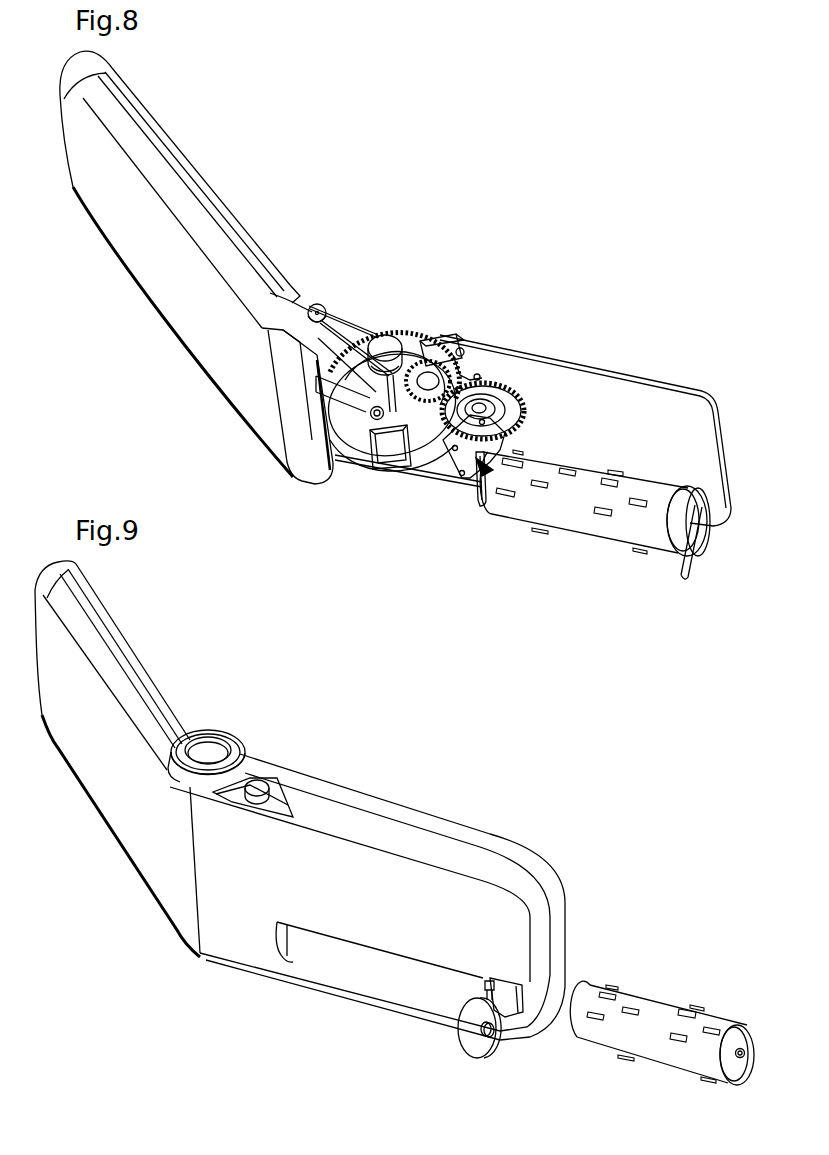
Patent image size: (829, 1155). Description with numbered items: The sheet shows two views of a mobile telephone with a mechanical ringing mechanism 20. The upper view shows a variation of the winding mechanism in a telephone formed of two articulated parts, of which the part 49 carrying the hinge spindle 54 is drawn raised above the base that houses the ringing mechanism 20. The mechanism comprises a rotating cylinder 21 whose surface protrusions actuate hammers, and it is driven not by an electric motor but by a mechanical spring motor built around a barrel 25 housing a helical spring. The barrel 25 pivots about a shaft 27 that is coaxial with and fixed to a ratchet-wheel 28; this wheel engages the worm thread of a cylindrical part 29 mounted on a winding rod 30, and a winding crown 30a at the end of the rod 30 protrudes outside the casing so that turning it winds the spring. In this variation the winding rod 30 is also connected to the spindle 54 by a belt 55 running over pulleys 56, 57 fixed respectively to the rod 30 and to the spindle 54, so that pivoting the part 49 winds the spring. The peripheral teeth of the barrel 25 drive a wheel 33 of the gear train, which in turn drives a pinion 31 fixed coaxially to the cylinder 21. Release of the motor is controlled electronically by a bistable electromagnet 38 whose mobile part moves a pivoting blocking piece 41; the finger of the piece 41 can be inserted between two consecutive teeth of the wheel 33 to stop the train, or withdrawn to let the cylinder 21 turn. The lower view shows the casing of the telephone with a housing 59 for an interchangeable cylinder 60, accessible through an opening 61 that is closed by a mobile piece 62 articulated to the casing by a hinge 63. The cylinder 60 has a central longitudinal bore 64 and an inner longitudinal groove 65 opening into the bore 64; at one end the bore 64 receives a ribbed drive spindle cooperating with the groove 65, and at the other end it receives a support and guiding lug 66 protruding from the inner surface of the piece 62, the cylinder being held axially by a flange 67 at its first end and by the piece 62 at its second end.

In FIG. 8, the ringing mechanism 20 is at (434, 488).
In FIG. 8, the rotating cylinder 21 is at (625, 528).
In FIG. 8, the barrel 25 is at (420, 440).
In FIG. 8, the shaft 27 is at (375, 446).
In FIG. 8, the ratchet-wheel 28 is at (330, 466).
In FIG. 8, the cylindrical part with a worm thread 29 is at (400, 450).
In FIG. 8, the winding rod 30 is at (425, 452).
In FIG. 8, the winding crown 30a is at (388, 352).
In FIG. 8, the pinion 31 is at (478, 492).
In FIG. 8, the wheel 33 is at (525, 418).
In FIG. 8, the bistable electromagnet 38 is at (445, 340).
In FIG. 8, the pivoting blocking piece 41 is at (480, 372).
In FIG. 8, the part of the telephone 49 is at (175, 195).
In FIG. 8, the spindle 54 is at (316, 304).
In FIG. 8, the belt 55 is at (349, 328).
In FIG. 8, the pulley 56 is at (372, 412).
In FIG. 8, the pulley 57 is at (300, 298).
In FIG. 9, the housing 59 is at (352, 968).
In FIG. 9, the cylinder 60 is at (641, 1045).
In FIG. 9, the opening 61 is at (510, 990).
In FIG. 8, the mobile piece 62 is at (690, 508).
In FIG. 9, the mobile piece 62 is at (463, 1043).
In FIG. 9, the hinge 63 is at (487, 985).
In FIG. 9, the central longitudinal bore 64 is at (743, 1051).
In FIG. 9, the inner longitudinal groove 65 is at (745, 1057).
In FIG. 9, the support and guiding lug 66 is at (492, 1040).
In FIG. 8, the flange 67 is at (476, 500).